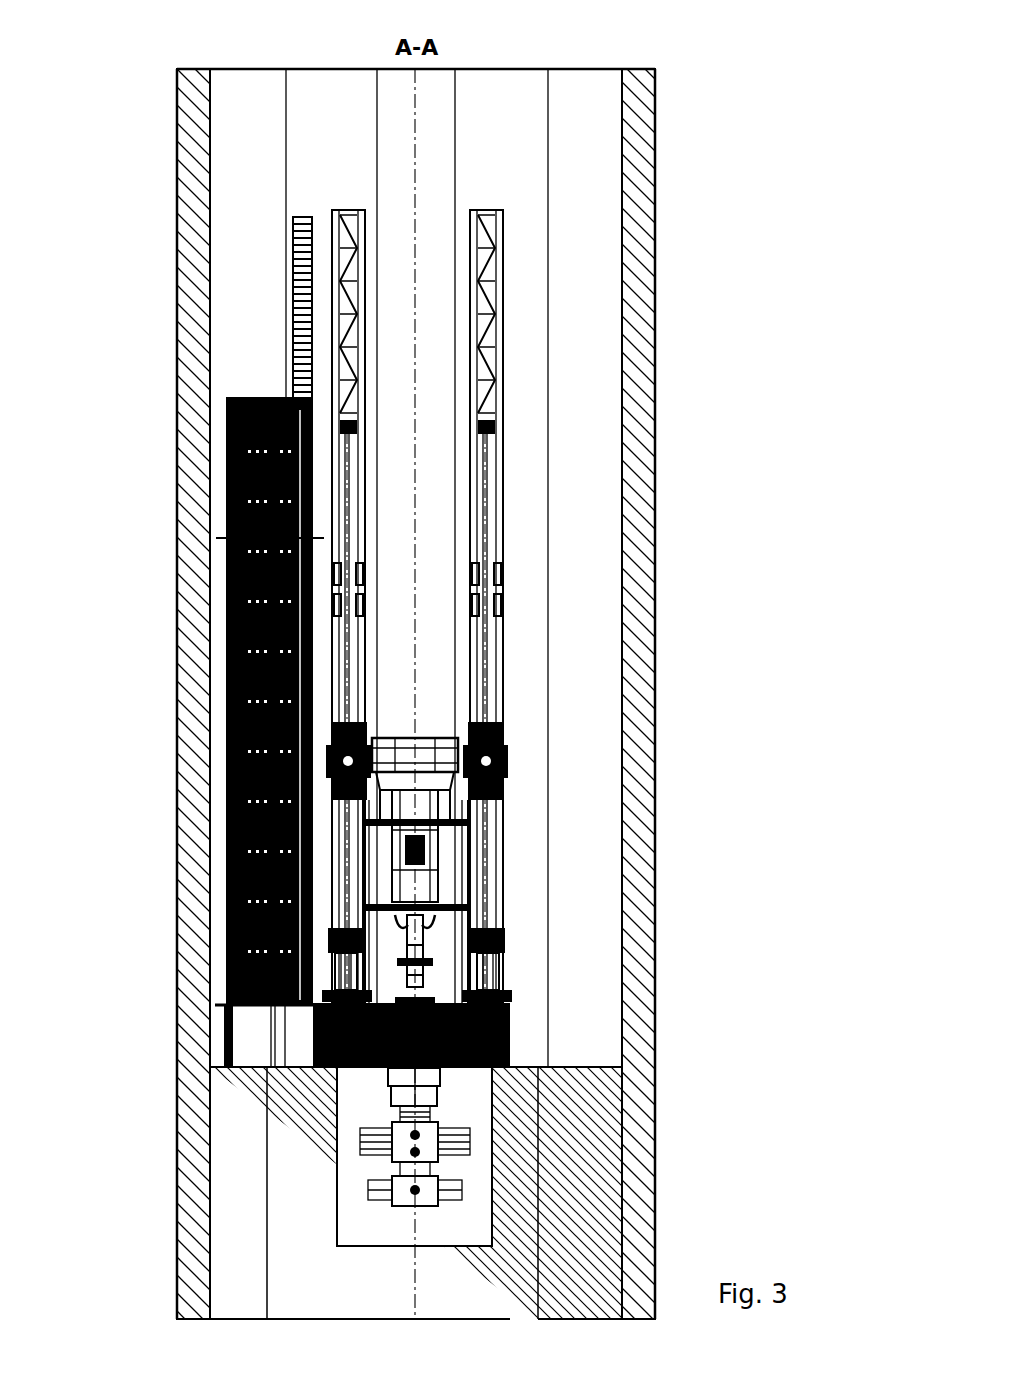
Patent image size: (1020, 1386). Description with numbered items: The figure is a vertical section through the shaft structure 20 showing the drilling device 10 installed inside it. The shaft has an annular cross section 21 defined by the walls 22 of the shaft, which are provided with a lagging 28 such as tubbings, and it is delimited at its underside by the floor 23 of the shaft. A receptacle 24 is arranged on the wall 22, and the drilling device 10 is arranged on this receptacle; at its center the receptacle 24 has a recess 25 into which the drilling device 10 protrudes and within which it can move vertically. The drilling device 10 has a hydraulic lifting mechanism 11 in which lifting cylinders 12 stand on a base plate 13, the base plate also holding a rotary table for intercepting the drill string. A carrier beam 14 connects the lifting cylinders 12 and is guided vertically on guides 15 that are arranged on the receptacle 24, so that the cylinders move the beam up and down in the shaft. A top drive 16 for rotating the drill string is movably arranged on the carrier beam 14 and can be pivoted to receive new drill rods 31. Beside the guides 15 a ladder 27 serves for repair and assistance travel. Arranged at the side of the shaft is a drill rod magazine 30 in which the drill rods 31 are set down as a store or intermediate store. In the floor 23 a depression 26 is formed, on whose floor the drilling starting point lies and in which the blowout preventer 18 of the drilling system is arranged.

The drilling device 10 is at (535, 858).
The hydraulic lifting mechanism 11 is at (403, 713).
The lifting cylinders 12 is at (490, 522).
The base plate 13 is at (310, 1045).
The carrier beam 14 is at (430, 750).
The guides 15 is at (497, 640).
The top drive 16 is at (383, 931).
The blowout preventer 18 is at (362, 1135).
The shaft structure 20 is at (722, 159).
The annular cross section 21 is at (246, 90).
The walls of the shaft 22 is at (628, 835).
The floor of the shaft 23 is at (593, 1068).
The receptacle 24 is at (518, 92).
The recess 25 is at (440, 95).
The depression 26 is at (470, 1215).
The ladder 27 is at (296, 270).
The lagging 28 is at (640, 968).
The drill rod magazine 30 is at (228, 490).
The drill rods 31 is at (207, 827).